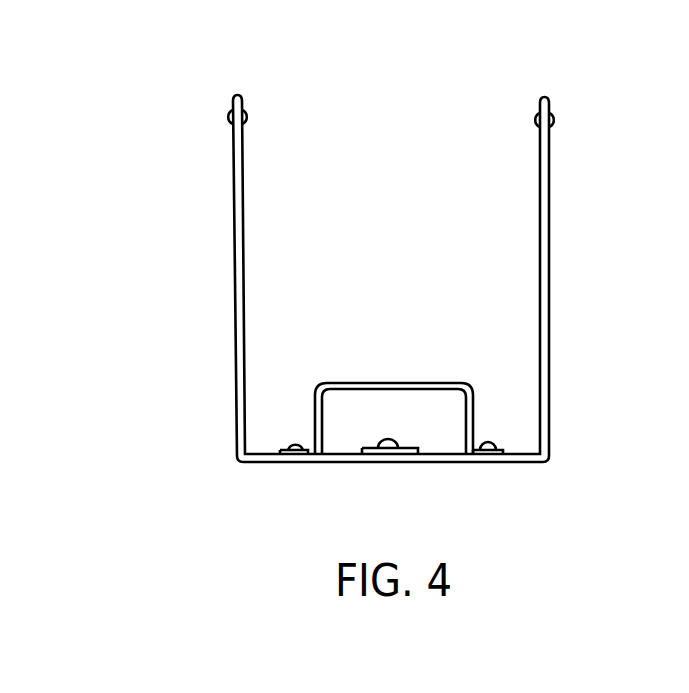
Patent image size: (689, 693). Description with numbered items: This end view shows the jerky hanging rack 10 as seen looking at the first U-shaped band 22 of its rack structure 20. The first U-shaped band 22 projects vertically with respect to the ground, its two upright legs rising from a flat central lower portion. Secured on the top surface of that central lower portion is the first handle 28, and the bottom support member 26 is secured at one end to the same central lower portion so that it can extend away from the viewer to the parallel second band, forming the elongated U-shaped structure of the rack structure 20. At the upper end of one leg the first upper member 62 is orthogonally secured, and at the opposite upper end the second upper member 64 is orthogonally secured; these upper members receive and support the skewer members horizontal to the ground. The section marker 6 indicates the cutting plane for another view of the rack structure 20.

The jerky hanging rack 10 is at (176, 204).
The rack structure 20 is at (235, 302).
The first U-shaped band 22 is at (448, 463).
The bottom support member 26 is at (410, 448).
The first handle 28 is at (397, 383).
The first upper member 62 is at (551, 141).
The second upper member 64 is at (232, 130).
The section line 6- 6 is at (391, 433).